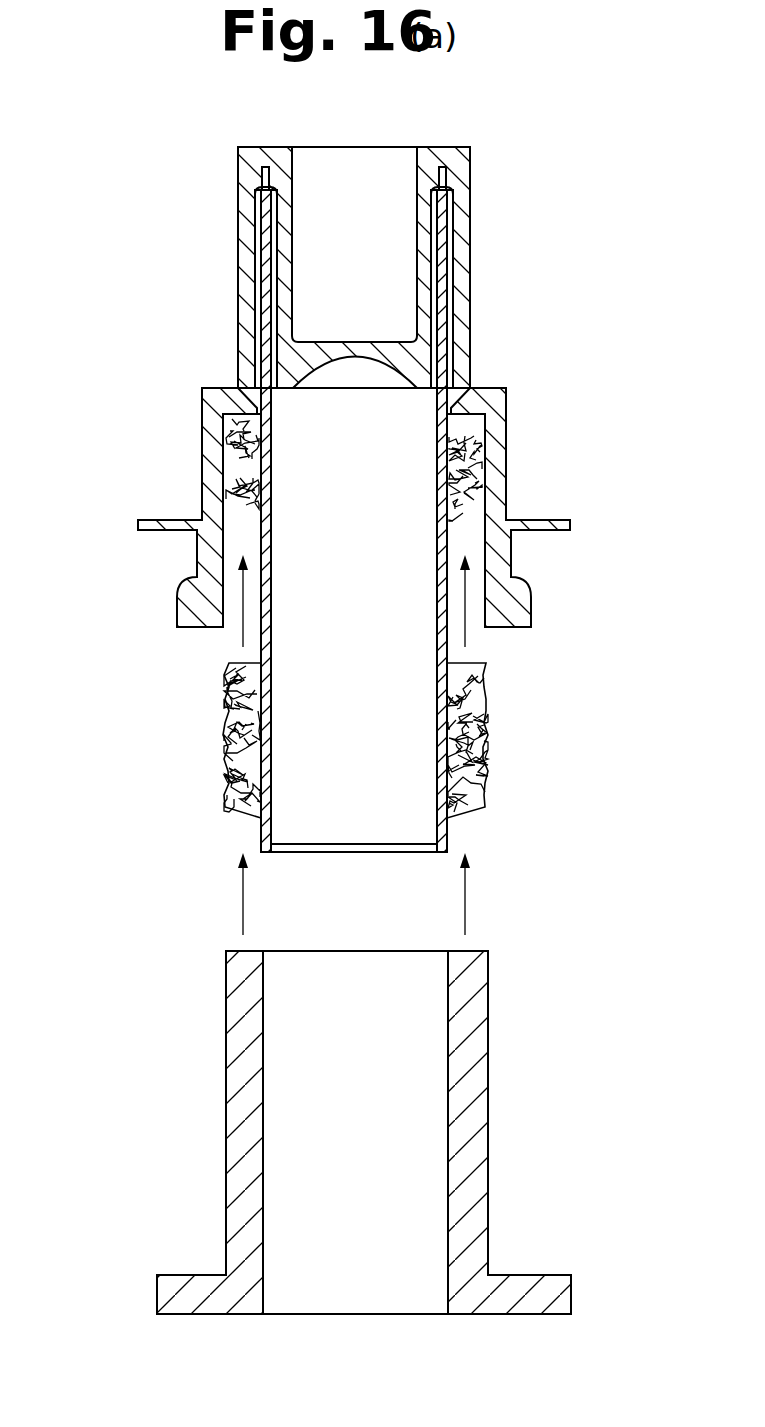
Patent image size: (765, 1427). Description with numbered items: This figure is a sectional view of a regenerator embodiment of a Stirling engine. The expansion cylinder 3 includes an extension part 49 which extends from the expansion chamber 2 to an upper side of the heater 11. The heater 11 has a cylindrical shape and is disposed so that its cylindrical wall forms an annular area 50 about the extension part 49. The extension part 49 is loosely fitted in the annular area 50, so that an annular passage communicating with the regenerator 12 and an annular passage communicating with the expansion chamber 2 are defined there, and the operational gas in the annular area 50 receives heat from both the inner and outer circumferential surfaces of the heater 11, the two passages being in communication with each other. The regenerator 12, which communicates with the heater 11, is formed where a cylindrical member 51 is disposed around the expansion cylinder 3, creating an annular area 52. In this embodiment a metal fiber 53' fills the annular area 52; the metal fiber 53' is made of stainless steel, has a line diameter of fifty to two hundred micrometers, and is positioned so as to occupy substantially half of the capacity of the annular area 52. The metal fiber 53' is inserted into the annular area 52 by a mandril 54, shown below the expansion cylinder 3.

The expansion chamber 2 is at (368, 474).
The expansion cylinder 3 is at (452, 843).
The heater 11 is at (470, 258).
The regenerator 12 is at (506, 455).
The extension part 49 is at (267, 258).
The annular area 50 is at (252, 187).
The cylindrical member 51 is at (200, 458).
The annular area 52 is at (237, 535).
The metal fiber 53' is at (407, 740).
The mandril 54 is at (488, 1125).